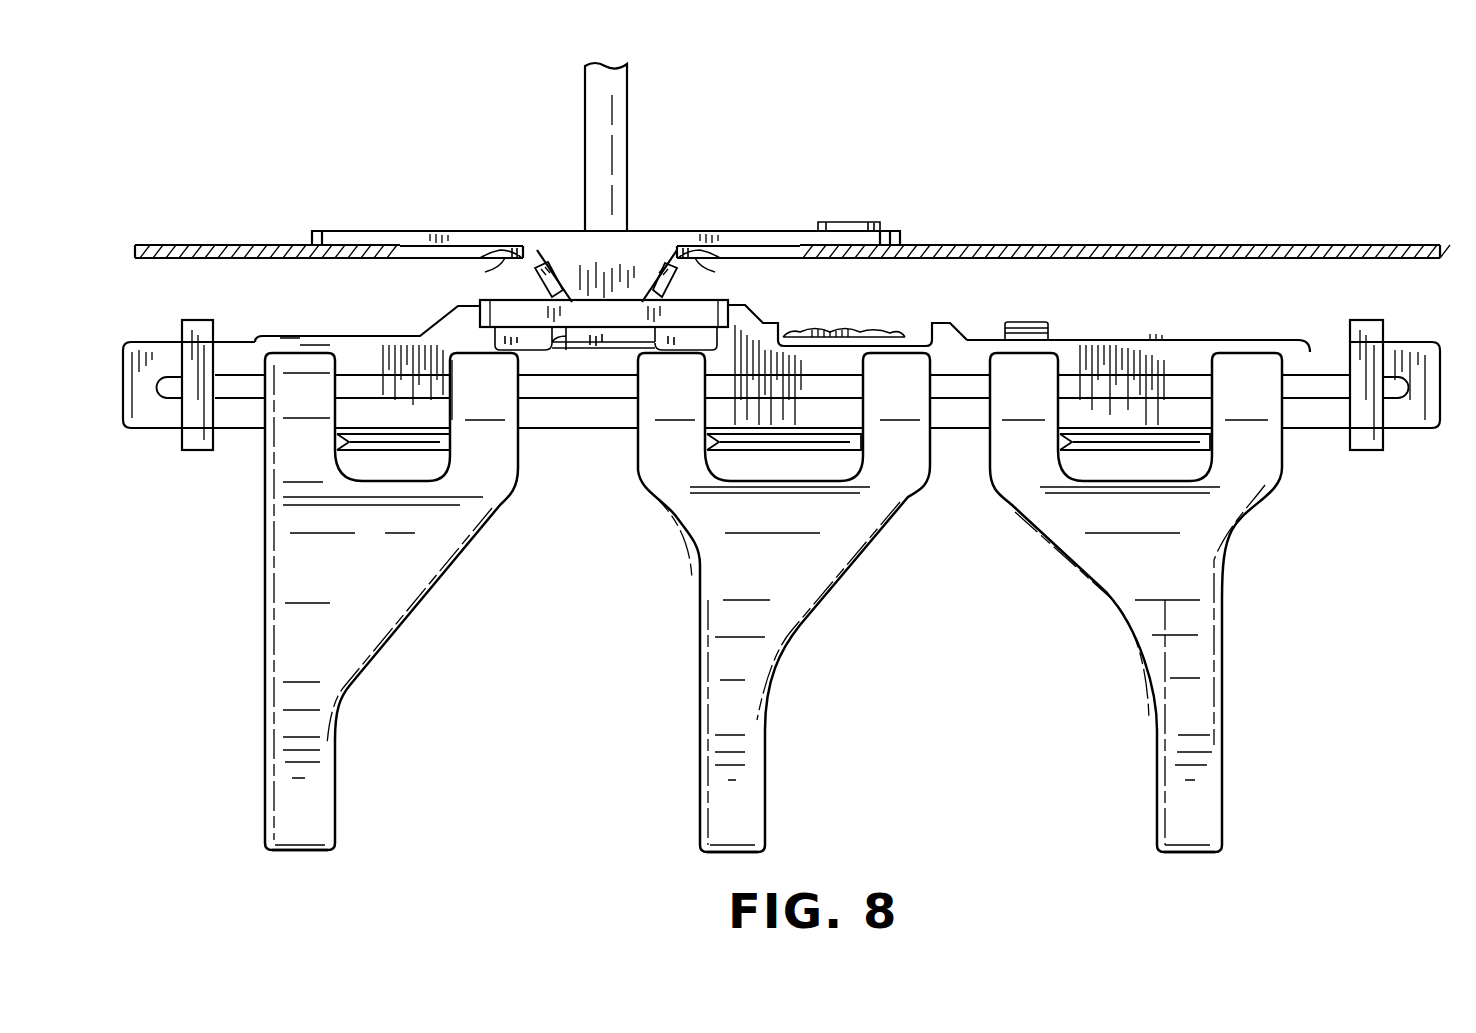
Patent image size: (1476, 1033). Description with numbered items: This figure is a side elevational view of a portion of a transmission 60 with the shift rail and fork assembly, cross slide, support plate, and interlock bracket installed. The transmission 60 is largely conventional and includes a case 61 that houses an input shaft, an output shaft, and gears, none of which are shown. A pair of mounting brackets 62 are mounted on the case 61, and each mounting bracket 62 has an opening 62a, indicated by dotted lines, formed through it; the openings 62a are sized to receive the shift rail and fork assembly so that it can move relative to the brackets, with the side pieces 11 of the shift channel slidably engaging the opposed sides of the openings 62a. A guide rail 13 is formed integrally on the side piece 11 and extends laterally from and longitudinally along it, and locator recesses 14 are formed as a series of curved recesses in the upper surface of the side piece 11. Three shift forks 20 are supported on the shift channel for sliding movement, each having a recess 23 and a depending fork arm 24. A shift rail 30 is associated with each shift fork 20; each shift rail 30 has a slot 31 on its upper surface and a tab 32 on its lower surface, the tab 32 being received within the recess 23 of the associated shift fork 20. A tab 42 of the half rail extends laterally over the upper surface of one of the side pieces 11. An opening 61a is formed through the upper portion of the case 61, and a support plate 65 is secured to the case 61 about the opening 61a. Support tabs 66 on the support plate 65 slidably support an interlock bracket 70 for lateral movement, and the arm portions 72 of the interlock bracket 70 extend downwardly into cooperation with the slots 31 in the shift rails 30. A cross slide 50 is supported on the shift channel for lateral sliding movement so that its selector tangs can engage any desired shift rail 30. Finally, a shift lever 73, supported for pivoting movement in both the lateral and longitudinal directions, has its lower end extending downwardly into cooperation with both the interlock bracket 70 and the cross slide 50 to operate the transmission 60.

The side pieces 11 is at (1418, 410).
The guide rail 13 is at (372, 387).
The locator recesses 14 is at (882, 333).
The shift fork 20 is at (380, 618).
The recess 23 is at (333, 448).
The fork arm 24 is at (308, 850).
The shift rail 30 is at (1173, 335).
The slot 31 is at (566, 342).
The tab 32 is at (433, 443).
The tab 42 is at (1025, 327).
The cross slide 50 is at (687, 313).
The transmission 60 is at (1233, 168).
The case 61 is at (1028, 253).
The opening 61a is at (417, 247).
The mounting brackets 62 is at (202, 327).
The opening 62a is at (198, 428).
The support plate 65 is at (795, 235).
The support tabs 66 is at (503, 257).
The interlock bracket 70 is at (581, 269).
The arm portions 72 is at (610, 342).
The shift lever 73 is at (617, 110).